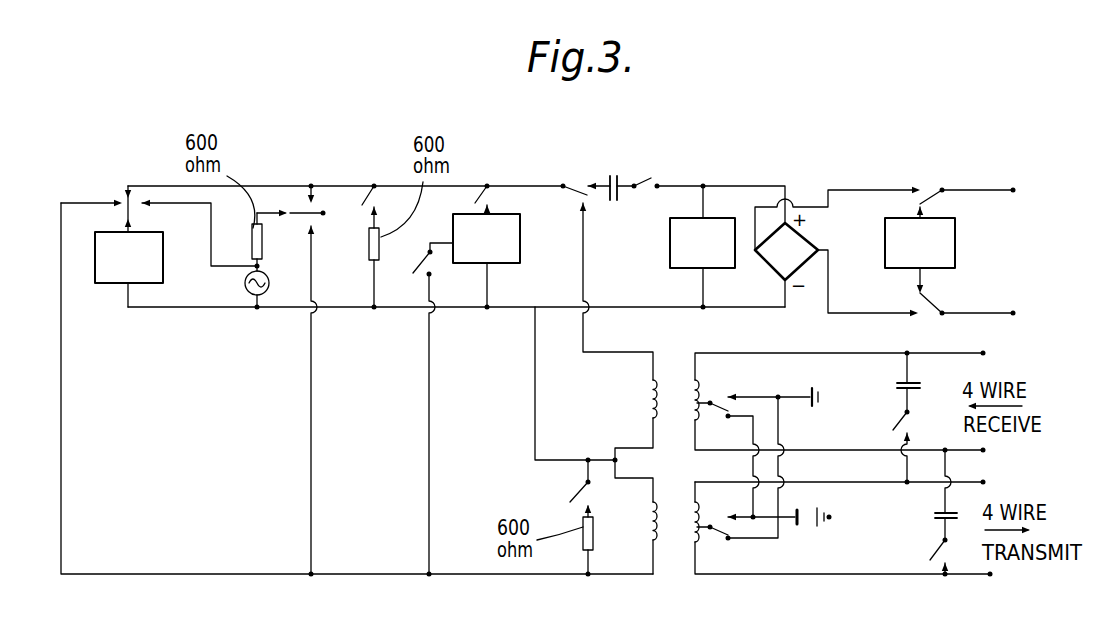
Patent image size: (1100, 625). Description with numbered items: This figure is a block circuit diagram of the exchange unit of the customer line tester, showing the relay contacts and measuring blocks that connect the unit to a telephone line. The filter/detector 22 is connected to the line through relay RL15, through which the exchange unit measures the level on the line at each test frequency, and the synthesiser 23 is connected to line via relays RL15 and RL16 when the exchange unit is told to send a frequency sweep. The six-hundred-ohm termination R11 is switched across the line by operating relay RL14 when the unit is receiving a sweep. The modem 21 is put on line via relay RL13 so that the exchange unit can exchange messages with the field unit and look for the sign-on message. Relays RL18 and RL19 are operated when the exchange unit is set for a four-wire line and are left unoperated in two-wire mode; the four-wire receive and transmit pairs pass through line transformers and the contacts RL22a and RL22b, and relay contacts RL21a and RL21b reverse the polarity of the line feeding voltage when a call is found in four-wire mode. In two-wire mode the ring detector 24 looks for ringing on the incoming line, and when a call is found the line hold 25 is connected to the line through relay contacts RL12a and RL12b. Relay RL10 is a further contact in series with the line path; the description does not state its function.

The relay RL15 is at (122, 200).
The relay RL16 is at (300, 210).
The relay RL14 is at (363, 200).
The relay RL13 is at (477, 200).
The relay RL19 is at (572, 185).
The relay RL10 is at (641, 177).
The relay RL12 contact RL12a is at (928, 190).
The relay RL12 contact RL12b is at (930, 315).
The relay RL18 is at (425, 277).
The relay RL21 contact RL21a is at (718, 400).
The relay RL21 contact RL21b is at (726, 536).
The relay RL22 contact RL22a is at (893, 427).
The relay RL22 contact RL22b is at (930, 556).
The 600 ohm termination R11 is at (369, 248).
The modem 21 is at (499, 251).
The filter/detector 22 is at (140, 273).
The synthesiser 23 is at (248, 292).
The ring detector 24 is at (932, 255).
The line hold 25 is at (714, 254).